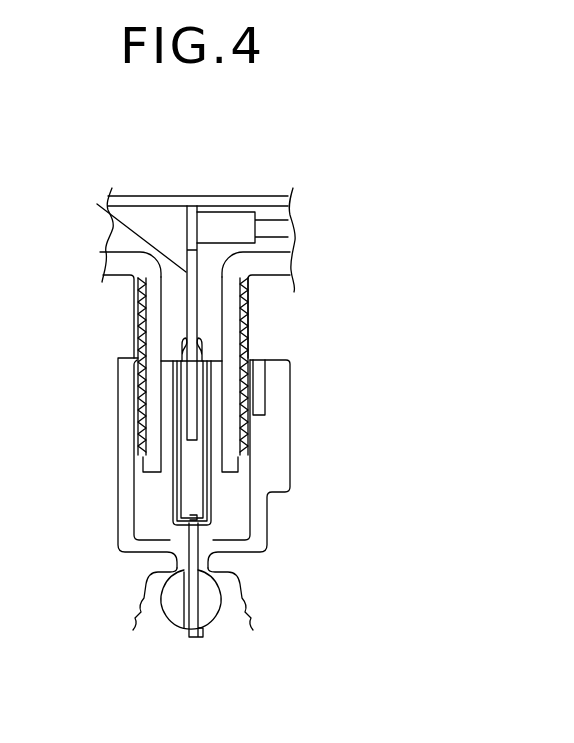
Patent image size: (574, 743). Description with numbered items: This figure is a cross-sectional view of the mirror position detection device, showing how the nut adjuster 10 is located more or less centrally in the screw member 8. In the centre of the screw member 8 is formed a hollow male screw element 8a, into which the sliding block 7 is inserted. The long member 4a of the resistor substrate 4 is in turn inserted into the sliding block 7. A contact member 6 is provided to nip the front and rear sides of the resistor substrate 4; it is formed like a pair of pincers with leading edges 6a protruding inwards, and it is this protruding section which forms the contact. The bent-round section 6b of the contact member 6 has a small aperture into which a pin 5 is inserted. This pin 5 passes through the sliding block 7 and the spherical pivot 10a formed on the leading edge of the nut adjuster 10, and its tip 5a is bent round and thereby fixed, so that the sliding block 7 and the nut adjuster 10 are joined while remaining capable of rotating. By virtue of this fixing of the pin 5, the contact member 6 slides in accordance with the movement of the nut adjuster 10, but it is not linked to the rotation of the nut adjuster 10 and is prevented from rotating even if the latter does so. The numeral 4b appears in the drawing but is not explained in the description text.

The resistor substrate 4 is at (182, 250).
The long member 4a is at (110, 225).
The rod / plunger 4b is at (187, 239).
The pin 5 is at (190, 595).
The tip 5a is at (193, 635).
The contact member 6 is at (188, 478).
The leading edges 6a is at (207, 356).
The bent-round section 6b is at (211, 531).
The sliding block 7 is at (213, 505).
The screw member 8 is at (110, 262).
The male screw element 8a is at (140, 320).
The nut adjuster 10 is at (118, 495).
The spherical pivot 10a is at (210, 608).